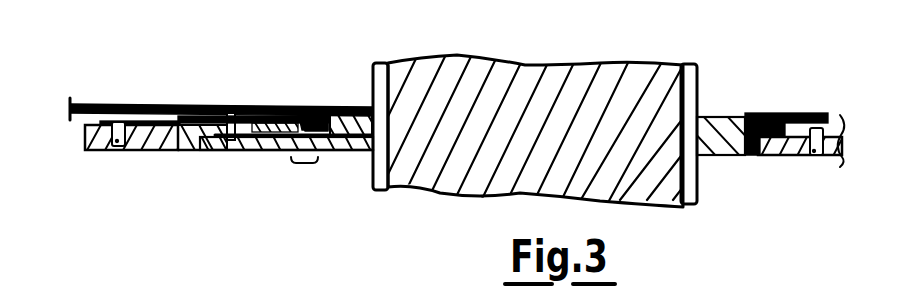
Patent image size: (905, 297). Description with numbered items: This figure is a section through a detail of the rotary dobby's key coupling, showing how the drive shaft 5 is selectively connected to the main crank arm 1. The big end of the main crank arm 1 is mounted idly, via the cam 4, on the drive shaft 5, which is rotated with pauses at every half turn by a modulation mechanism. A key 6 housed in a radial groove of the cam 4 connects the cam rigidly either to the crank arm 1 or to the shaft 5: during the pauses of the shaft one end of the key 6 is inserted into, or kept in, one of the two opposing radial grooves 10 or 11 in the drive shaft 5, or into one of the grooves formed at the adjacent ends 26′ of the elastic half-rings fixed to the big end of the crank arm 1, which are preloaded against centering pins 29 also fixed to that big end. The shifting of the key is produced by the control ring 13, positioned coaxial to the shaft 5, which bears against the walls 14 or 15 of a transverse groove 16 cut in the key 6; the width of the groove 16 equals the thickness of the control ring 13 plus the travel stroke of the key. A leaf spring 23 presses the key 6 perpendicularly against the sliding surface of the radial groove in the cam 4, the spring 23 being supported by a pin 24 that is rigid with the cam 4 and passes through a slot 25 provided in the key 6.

The main crank arm 1 is at (95, 135).
The cam 4 is at (268, 151).
The drive shaft 5 is at (630, 94).
The key 6 is at (345, 108).
The radial groove 10 is at (379, 63).
The radial groove 11 is at (690, 72).
The control ring 13 is at (301, 108).
The wall 14 is at (298, 110).
The wall 15 is at (326, 110).
The transverse groove 16 is at (305, 164).
The leaf spring 23 is at (262, 110).
The pin 24 is at (231, 143).
The slot 25 is at (253, 153).
The end of elastic half-ring 26′ is at (832, 118).
The centering pin 29 is at (117, 147).